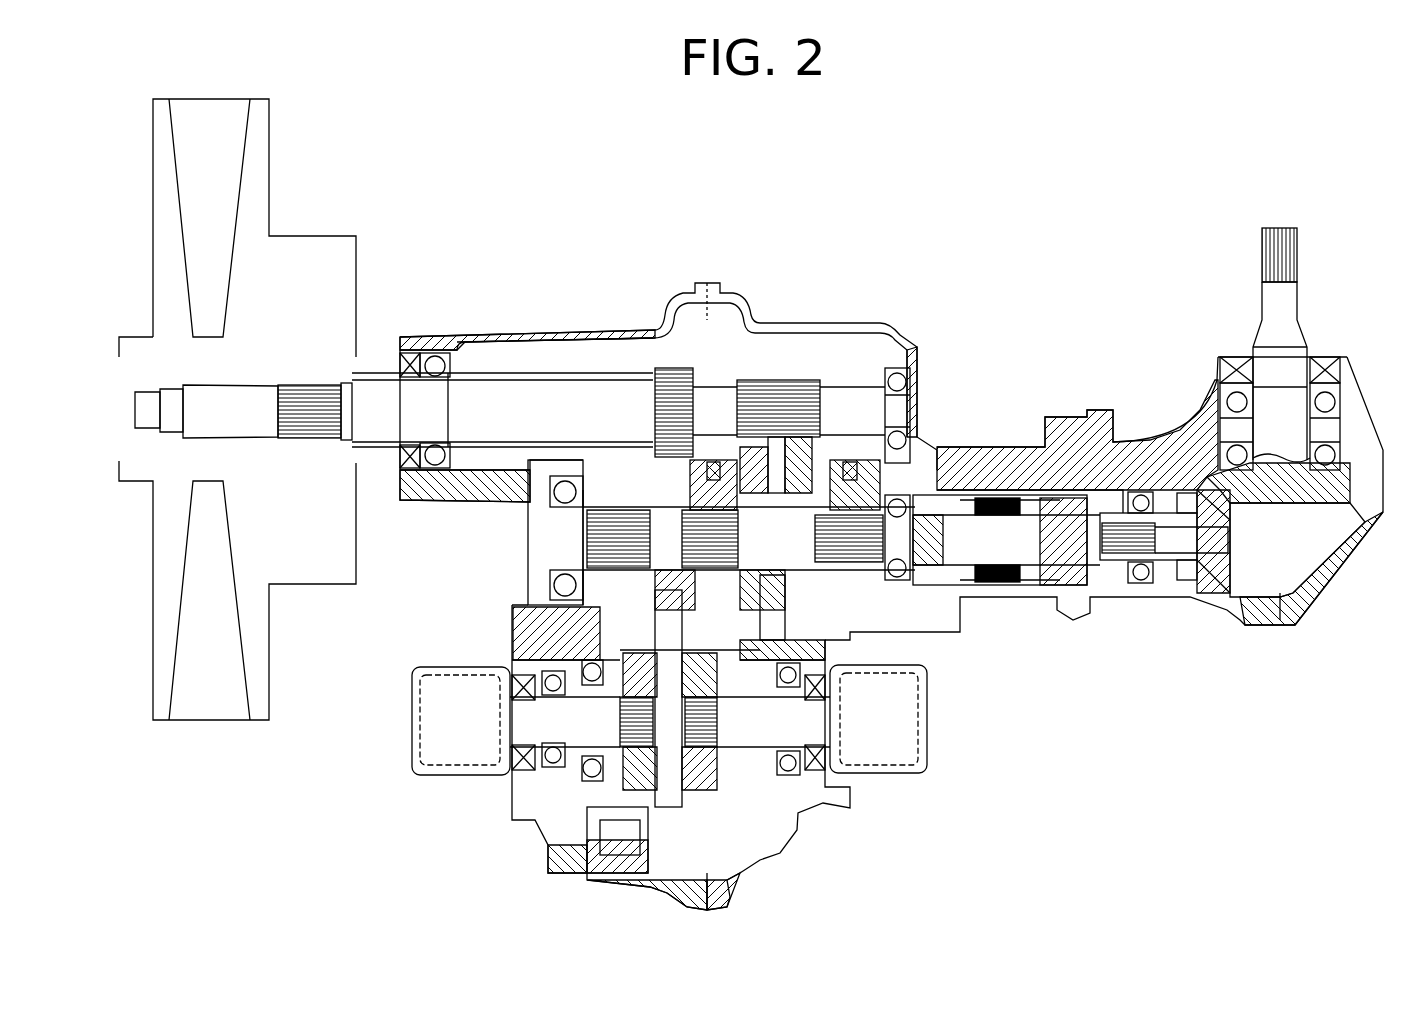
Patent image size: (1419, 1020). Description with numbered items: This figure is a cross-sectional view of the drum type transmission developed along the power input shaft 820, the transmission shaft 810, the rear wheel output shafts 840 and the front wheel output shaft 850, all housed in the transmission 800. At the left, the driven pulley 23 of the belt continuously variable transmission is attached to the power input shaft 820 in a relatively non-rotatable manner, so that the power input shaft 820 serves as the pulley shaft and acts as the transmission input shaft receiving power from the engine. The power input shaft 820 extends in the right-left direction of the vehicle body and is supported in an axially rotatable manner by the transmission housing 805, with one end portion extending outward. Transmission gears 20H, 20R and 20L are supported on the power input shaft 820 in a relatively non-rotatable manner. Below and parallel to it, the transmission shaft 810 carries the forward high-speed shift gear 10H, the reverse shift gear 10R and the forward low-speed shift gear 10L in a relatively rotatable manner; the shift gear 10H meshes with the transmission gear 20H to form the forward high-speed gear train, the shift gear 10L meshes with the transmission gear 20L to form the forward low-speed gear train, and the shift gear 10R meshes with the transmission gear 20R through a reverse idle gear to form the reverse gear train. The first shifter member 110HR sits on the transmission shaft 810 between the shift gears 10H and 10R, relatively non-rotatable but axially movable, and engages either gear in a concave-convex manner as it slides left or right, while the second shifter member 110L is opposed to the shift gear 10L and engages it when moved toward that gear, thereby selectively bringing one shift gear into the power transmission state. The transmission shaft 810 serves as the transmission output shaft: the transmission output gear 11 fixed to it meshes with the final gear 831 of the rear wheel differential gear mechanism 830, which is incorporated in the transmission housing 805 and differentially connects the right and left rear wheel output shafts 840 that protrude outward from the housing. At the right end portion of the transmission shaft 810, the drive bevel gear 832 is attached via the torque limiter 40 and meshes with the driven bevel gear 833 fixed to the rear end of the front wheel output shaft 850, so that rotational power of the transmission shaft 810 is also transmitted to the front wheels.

The driven pulley 23 is at (269, 203).
The transmission housing 805 is at (487, 337).
The power input shaft 820 is at (543, 395).
The transmission gear 20H is at (660, 368).
The transmission gear 20R is at (742, 383).
The transmission gear 20L is at (813, 382).
The transmission 800 is at (910, 312).
The first shifter member 110HR is at (722, 458).
The second shifter member 110L is at (925, 462).
The forward low-speed shift gear 10L is at (813, 464).
The forward high-speed shift gear 10H is at (667, 497).
The transmission output gear 11 is at (610, 520).
The transmission shaft 810 is at (567, 541).
The final gear 831 is at (555, 585).
The reverse shift gear 10R is at (762, 627).
The torque limiter 40 is at (1003, 592).
The rear wheel output shaft 840 is at (575, 720).
The rear wheel differential gear mechanism 830 is at (740, 798).
The drive bevel gear 832 is at (1222, 578).
The driven bevel gear 833 is at (1300, 497).
The front wheel output shaft 850 is at (1295, 294).